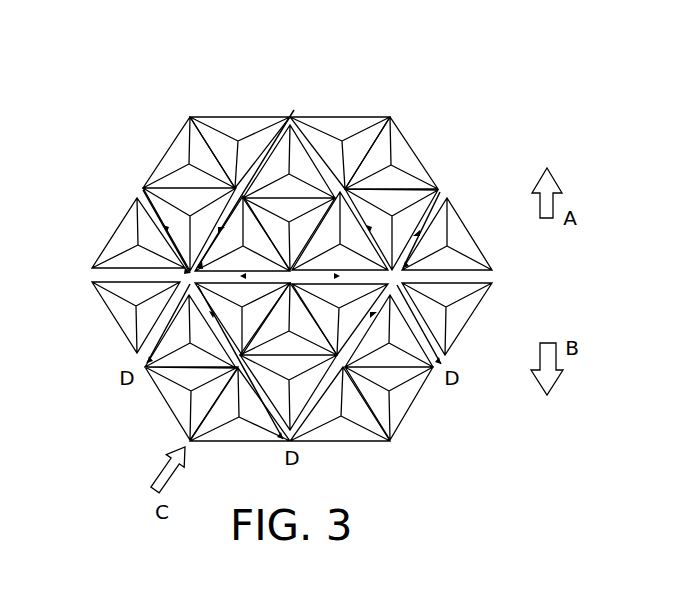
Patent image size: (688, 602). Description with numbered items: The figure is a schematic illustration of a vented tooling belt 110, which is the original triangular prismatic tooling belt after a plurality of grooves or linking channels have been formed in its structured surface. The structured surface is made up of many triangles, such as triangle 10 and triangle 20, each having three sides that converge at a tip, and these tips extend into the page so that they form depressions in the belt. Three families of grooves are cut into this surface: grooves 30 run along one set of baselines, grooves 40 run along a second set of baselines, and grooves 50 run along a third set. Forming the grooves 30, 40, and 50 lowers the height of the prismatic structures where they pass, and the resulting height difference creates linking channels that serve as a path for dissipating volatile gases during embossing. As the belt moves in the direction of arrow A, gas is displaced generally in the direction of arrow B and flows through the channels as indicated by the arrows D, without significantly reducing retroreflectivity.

The tooling belt 110 is at (287, 247).
The triangle 10 is at (237, 228).
The triangle 20 is at (307, 200).
The grooves 30 is at (88, 271).
The grooves 40 is at (286, 116).
The grooves 50 is at (139, 197).